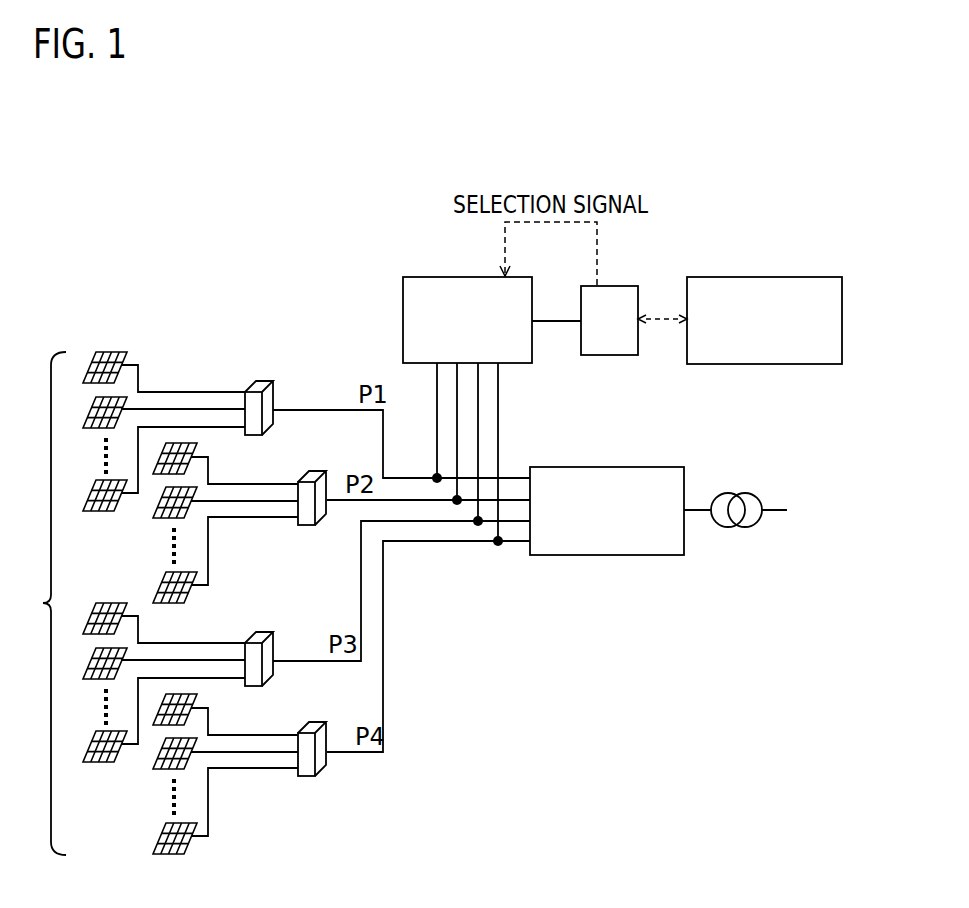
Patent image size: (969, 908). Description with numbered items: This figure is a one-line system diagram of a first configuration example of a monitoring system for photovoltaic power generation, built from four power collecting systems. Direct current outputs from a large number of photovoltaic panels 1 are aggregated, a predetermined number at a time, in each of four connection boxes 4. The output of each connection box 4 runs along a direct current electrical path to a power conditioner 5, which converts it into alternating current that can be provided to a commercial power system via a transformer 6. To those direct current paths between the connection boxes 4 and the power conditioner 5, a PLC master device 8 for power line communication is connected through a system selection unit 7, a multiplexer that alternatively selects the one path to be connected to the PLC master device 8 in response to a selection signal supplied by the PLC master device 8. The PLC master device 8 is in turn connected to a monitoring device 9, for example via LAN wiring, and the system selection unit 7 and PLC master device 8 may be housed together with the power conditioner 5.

The photovoltaic panels 1 is at (106, 328).
The connection box 4 is at (262, 380).
The power conditioner 5 is at (593, 467).
The transformer 6 is at (745, 493).
The system selection unit 7 is at (437, 277).
The PLC master device 8 is at (628, 286).
The monitoring device 9 is at (746, 277).